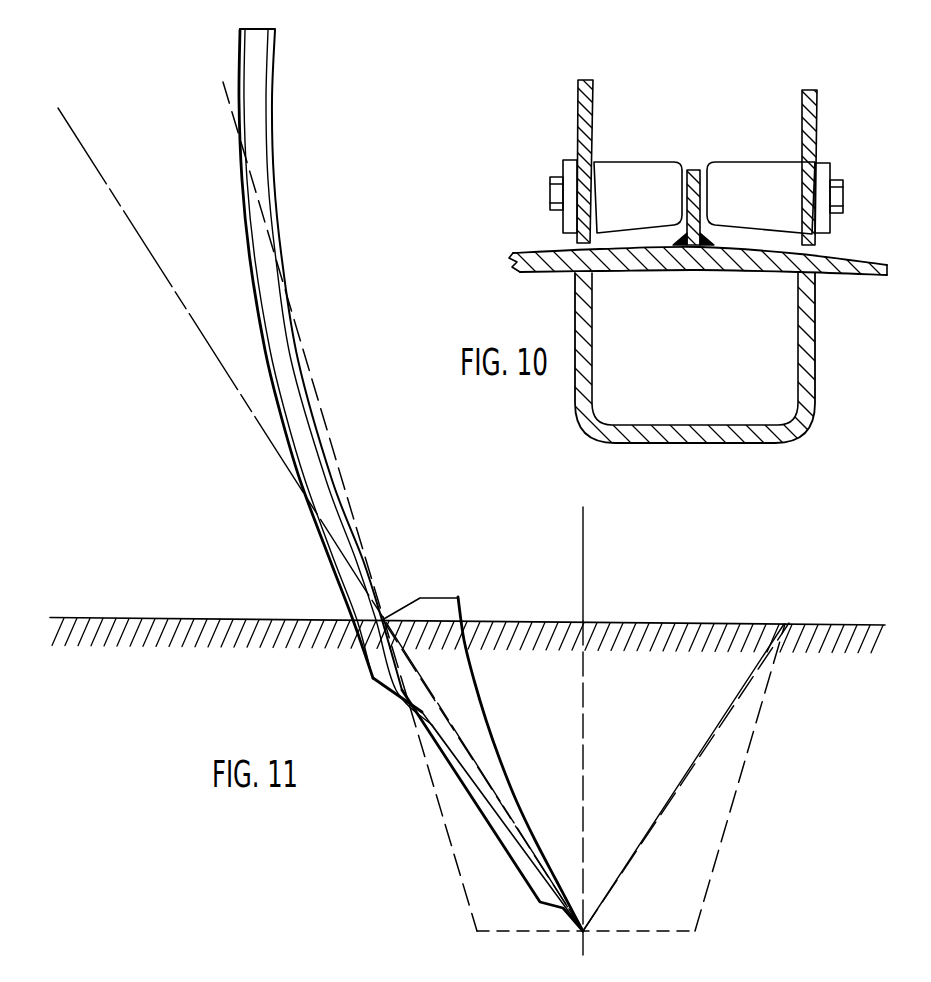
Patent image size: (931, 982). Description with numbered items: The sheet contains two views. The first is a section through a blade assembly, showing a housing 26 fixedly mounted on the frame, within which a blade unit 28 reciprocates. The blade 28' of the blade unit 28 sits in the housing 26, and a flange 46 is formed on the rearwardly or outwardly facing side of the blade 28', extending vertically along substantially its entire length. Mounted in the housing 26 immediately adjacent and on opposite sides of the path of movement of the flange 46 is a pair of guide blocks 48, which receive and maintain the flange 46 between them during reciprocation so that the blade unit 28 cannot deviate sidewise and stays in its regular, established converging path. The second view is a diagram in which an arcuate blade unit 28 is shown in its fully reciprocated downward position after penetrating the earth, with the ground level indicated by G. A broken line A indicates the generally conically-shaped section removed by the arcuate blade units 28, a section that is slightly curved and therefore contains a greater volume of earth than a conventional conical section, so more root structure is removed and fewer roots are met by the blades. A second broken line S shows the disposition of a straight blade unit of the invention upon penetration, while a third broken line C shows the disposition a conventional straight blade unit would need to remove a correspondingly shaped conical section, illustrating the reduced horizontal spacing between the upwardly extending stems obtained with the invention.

In FIG. 10, the housing 26 is at (577, 133).
In FIG. 10, the guide blocks 48 is at (648, 132).
In FIG. 10, the flange 46 is at (693, 168).
In FIG. 11, the blade unit 28 is at (411, 480).
In FIG. 10, the blade 28' is at (700, 345).
In FIG. 11, the blade 28' is at (482, 764).
In FIG. 11, the second broken line S is at (232, 108).
In FIG. 11, the third broken line C is at (187, 317).
In FIG. 11, the broken line A is at (490, 802).
In FIG. 11, the ground level G is at (845, 623).